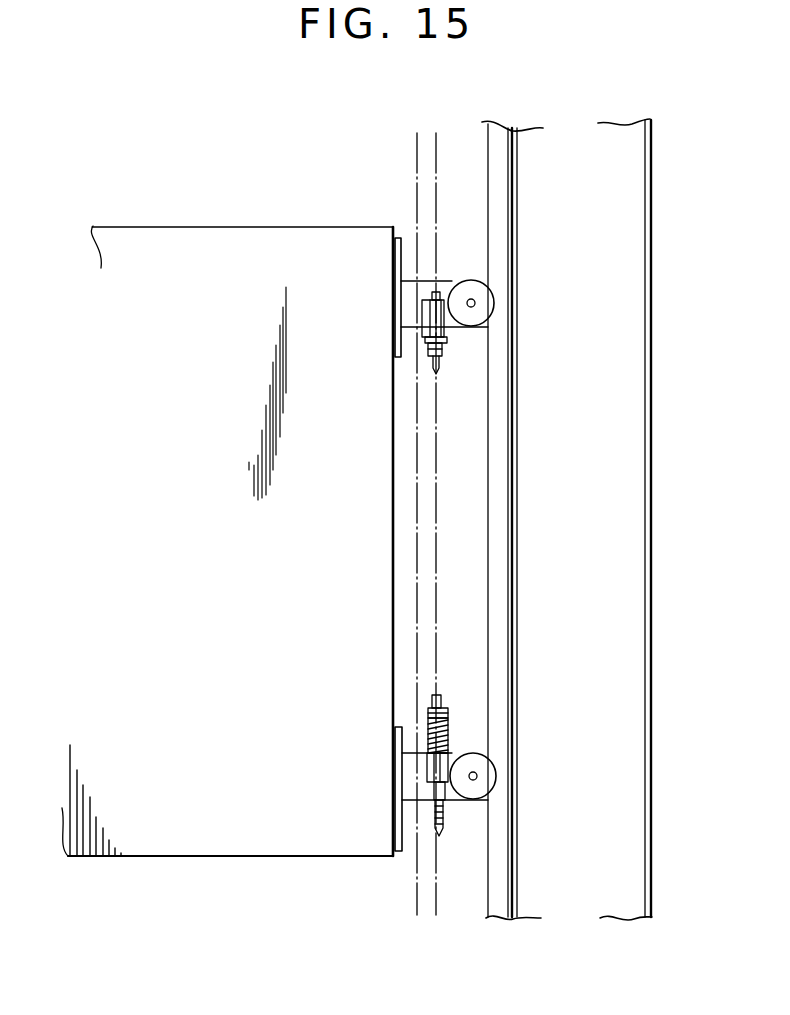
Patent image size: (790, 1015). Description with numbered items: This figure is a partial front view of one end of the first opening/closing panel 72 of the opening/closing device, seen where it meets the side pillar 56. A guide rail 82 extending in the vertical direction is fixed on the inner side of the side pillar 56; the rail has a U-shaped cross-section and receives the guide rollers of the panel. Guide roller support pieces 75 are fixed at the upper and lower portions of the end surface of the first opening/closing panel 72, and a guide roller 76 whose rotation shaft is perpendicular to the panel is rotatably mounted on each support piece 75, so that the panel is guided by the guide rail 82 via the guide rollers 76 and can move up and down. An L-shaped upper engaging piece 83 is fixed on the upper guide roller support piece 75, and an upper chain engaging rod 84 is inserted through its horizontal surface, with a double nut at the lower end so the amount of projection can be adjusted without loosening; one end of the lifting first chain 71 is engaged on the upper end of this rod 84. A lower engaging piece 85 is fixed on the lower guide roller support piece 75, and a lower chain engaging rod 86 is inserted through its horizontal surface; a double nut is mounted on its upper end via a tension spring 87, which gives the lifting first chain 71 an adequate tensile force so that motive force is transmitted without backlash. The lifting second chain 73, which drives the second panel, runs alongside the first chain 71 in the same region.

The side pillar 56 is at (648, 210).
The lifting first chain 71 is at (436, 176).
The first opening/closing panel 72 is at (205, 228).
The lifting second chain 73 is at (413, 154).
The guide roller support piece 75 is at (450, 281).
The guide roller 76 is at (495, 303).
The guide rail 82 is at (498, 517).
The upper engaging piece 83 is at (447, 340).
The upper chain engaging rod 84 is at (438, 368).
The lower engaging piece 85 is at (457, 757).
The lower chain engaging rod 86 is at (440, 691).
The tension spring 87 is at (426, 730).